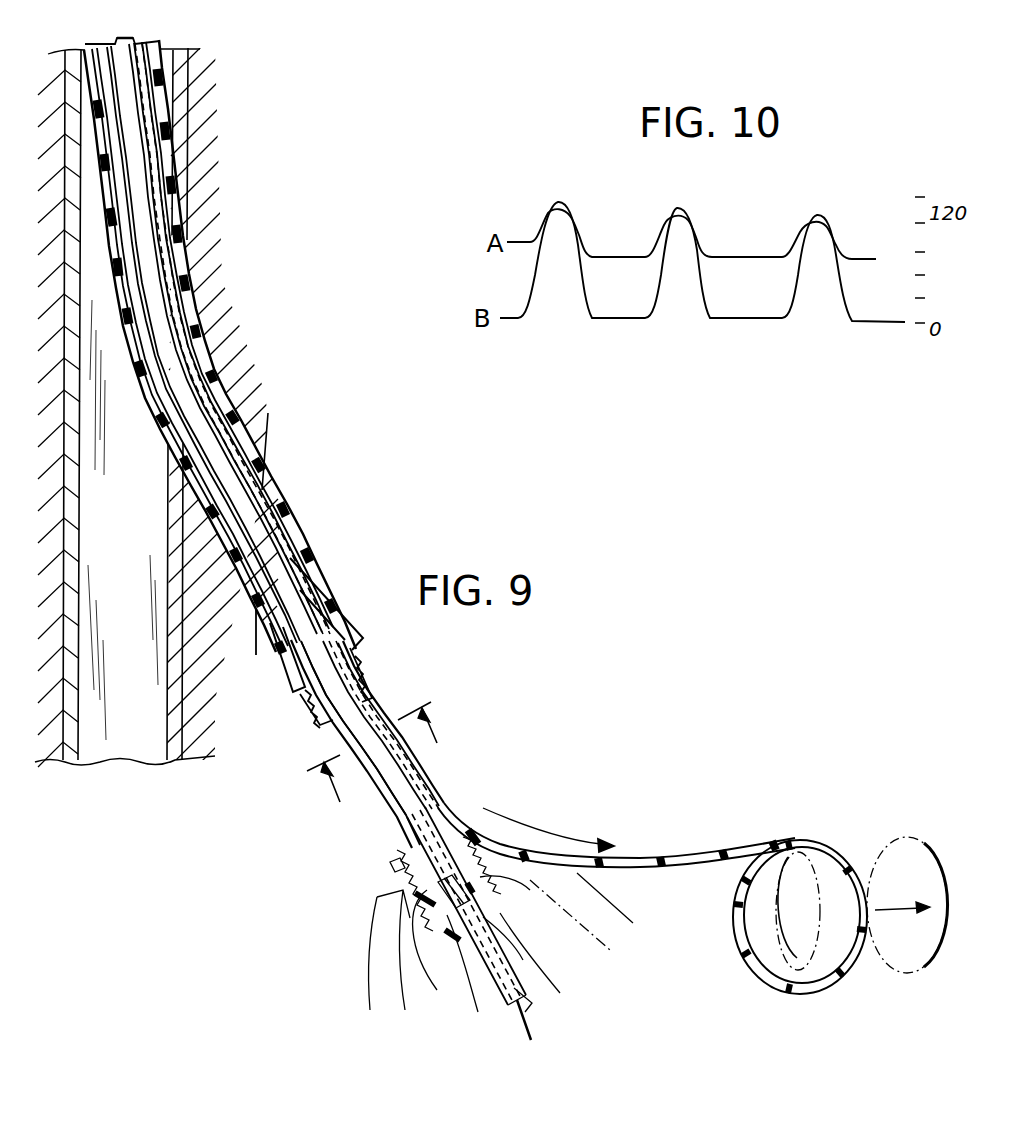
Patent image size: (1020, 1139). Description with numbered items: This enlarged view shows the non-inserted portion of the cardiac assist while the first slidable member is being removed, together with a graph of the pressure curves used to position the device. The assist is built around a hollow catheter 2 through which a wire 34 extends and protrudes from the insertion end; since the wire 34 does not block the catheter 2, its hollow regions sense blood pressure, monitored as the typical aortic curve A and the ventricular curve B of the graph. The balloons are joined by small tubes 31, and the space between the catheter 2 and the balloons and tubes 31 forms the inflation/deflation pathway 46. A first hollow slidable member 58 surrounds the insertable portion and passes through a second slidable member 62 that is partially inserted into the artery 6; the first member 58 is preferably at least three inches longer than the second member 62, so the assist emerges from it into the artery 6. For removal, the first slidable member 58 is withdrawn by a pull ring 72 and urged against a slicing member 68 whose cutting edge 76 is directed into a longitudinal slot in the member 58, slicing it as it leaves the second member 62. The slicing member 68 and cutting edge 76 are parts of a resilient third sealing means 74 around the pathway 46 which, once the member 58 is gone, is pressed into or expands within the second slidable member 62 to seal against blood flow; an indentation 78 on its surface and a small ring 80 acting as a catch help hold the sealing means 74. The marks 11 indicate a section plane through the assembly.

The catheter 2 is at (131, 42).
The artery 6 is at (182, 708).
The section line 11 is at (385, 765).
The small tubes 31 is at (150, 41).
The wire 34 is at (122, 42).
The balloon inflation/deflation pathway 46 is at (540, 1000).
The first hollow slidable member 58 is at (160, 44).
The second slidable member 62 is at (158, 62).
The slicing member 68 is at (428, 935).
The pull ring 72 is at (790, 990).
The third sealing means 74 is at (510, 940).
The cutting edge 76 is at (412, 861).
The indentation 78 is at (452, 965).
The small ring 80 is at (500, 893).